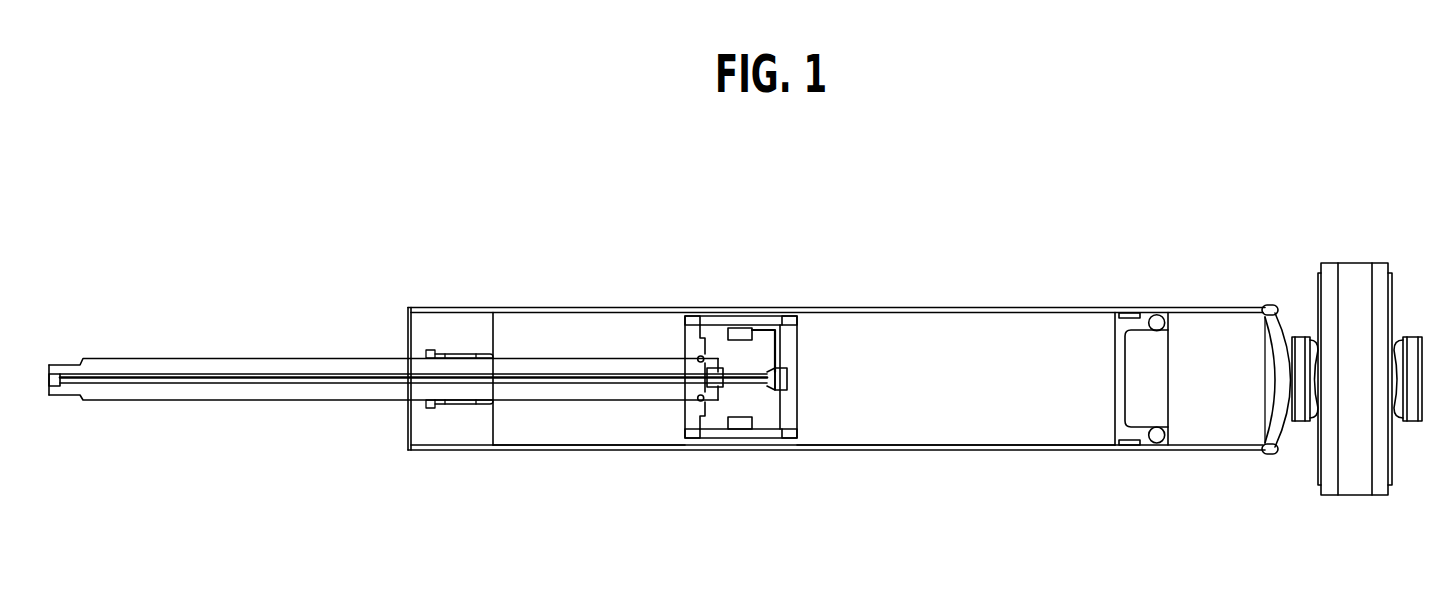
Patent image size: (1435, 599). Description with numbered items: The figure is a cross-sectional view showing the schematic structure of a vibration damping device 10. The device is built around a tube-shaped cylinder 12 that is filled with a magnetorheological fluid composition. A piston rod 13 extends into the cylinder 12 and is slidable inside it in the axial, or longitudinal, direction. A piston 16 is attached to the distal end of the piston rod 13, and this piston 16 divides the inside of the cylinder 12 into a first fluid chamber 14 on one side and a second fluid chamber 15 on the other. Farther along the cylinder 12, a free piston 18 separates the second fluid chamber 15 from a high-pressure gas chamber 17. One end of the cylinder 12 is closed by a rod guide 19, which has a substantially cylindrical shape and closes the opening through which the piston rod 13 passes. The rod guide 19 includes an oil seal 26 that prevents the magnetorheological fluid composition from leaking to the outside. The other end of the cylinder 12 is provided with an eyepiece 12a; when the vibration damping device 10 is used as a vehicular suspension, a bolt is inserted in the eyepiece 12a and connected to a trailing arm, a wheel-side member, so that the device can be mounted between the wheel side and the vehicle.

The vibration damping device 10 is at (917, 240).
The cylinder 12 is at (896, 451).
The eyepiece 12a is at (1317, 447).
The piston rod 13 is at (297, 402).
The first fluid chamber 14 is at (569, 430).
The second fluid chamber 15 is at (980, 425).
The piston 16 is at (680, 412).
The high-pressure gas chamber 17 is at (1202, 425).
The free piston 18 is at (1115, 412).
The rod guide 19 is at (455, 430).
The oil seal 26 is at (426, 350).